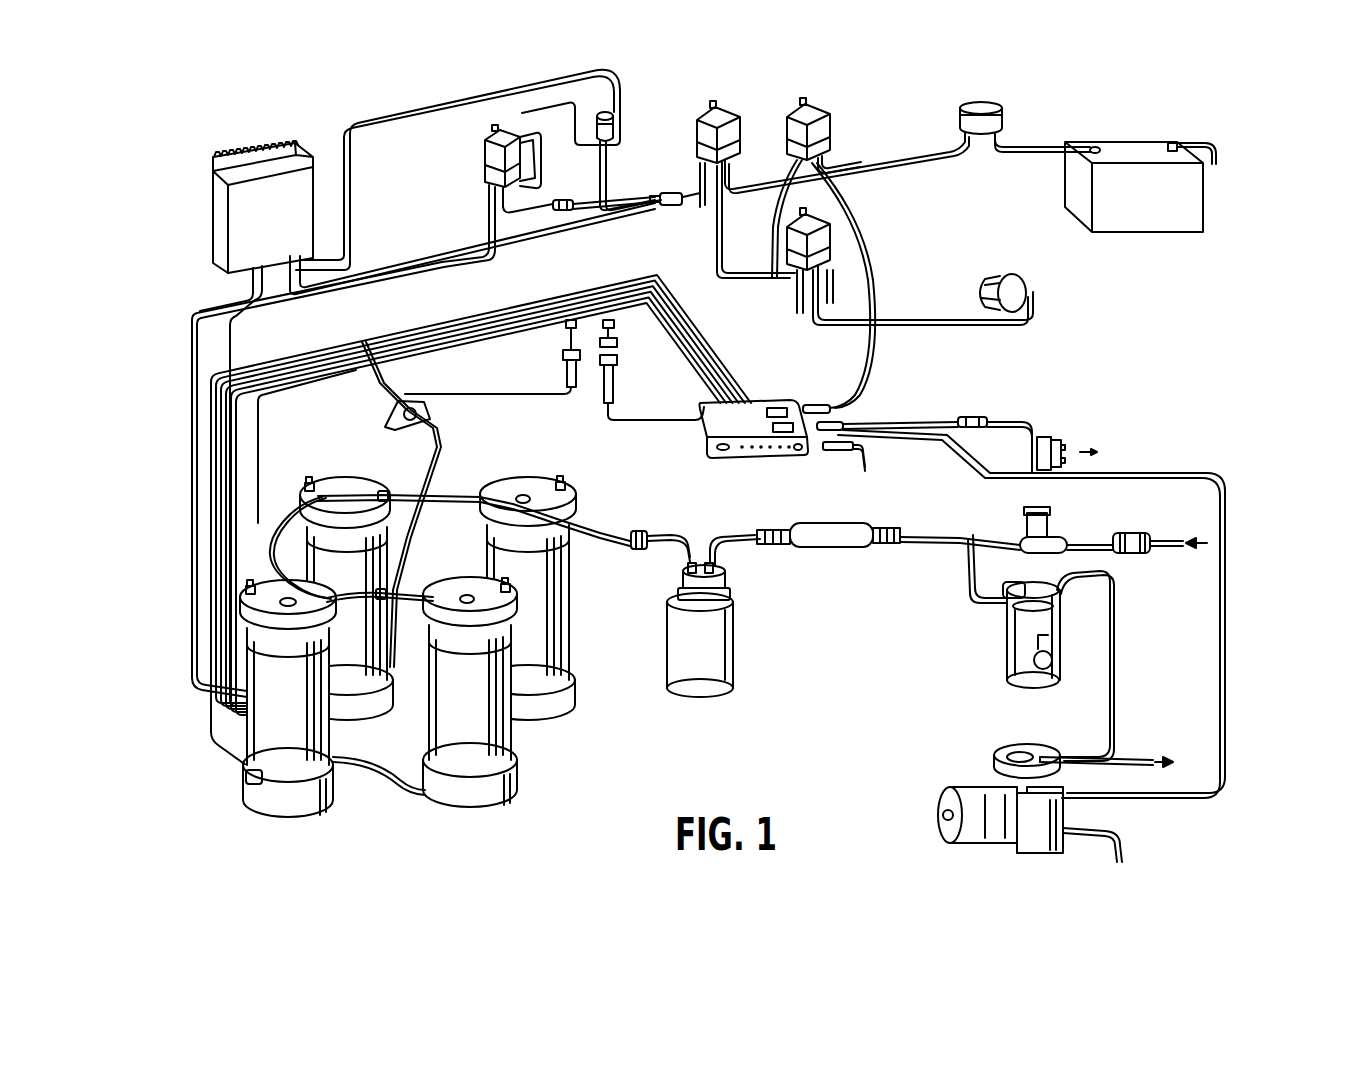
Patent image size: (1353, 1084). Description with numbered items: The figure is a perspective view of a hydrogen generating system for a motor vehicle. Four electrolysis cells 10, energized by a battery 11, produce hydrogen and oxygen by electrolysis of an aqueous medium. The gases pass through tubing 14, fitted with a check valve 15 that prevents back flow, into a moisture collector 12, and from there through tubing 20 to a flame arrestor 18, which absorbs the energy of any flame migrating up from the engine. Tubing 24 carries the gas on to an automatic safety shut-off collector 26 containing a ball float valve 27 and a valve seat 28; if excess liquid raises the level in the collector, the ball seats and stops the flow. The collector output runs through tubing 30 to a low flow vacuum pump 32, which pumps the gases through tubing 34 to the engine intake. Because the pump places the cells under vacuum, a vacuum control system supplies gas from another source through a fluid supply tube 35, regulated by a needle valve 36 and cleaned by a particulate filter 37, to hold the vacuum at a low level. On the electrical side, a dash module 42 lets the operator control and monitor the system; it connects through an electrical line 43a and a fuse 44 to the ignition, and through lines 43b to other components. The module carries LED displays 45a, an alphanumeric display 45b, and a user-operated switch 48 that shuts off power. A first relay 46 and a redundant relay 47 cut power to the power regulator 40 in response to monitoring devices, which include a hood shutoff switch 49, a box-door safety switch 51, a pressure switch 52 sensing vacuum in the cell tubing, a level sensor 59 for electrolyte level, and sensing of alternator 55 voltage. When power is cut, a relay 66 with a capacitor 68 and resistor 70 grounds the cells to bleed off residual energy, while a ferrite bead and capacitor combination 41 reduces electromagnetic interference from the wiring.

The electrolysis cells 10 is at (300, 803).
The battery 11 is at (1140, 143).
The moisture collector 12 is at (733, 640).
The tubing 14 is at (268, 548).
The check valve 15 is at (637, 551).
The flame arrestor 18 is at (837, 548).
The tubing 20 is at (735, 542).
The tubing 24 is at (968, 565).
The automatic safety shut-off collector 26 is at (1008, 658).
The ball float valve 27 is at (1050, 670).
The valve seat 28 is at (1077, 622).
The tubing 30 is at (1114, 640).
The low flow vacuum pump 32 is at (970, 793).
The tubing 34 is at (1127, 758).
The fluid supply tube 35 is at (1088, 540).
The needle valve 36 is at (1022, 537).
The particulate filter 37 is at (1152, 540).
The power regulator 40 is at (228, 215).
The ferrite bead and capacitor combination 41 is at (697, 173).
The dash module 42 is at (744, 424).
The electrical line 43a is at (922, 420).
The lines 43b is at (703, 356).
The fuse 44 is at (837, 237).
The LED displays 45a is at (753, 451).
The alphanumeric display 45b is at (780, 405).
The first relay or solenoid 46 is at (833, 127).
The relay 47 is at (742, 124).
The switch 48 is at (797, 450).
The shutoff switch 49 is at (617, 333).
The safety switch 51 is at (563, 372).
The pressure switch 52 is at (433, 420).
The alternator 55 is at (1000, 277).
The level sensor 59 is at (247, 742).
The relay 66 is at (483, 152).
The capacitor 68 is at (627, 127).
The resistor 70 is at (569, 211).